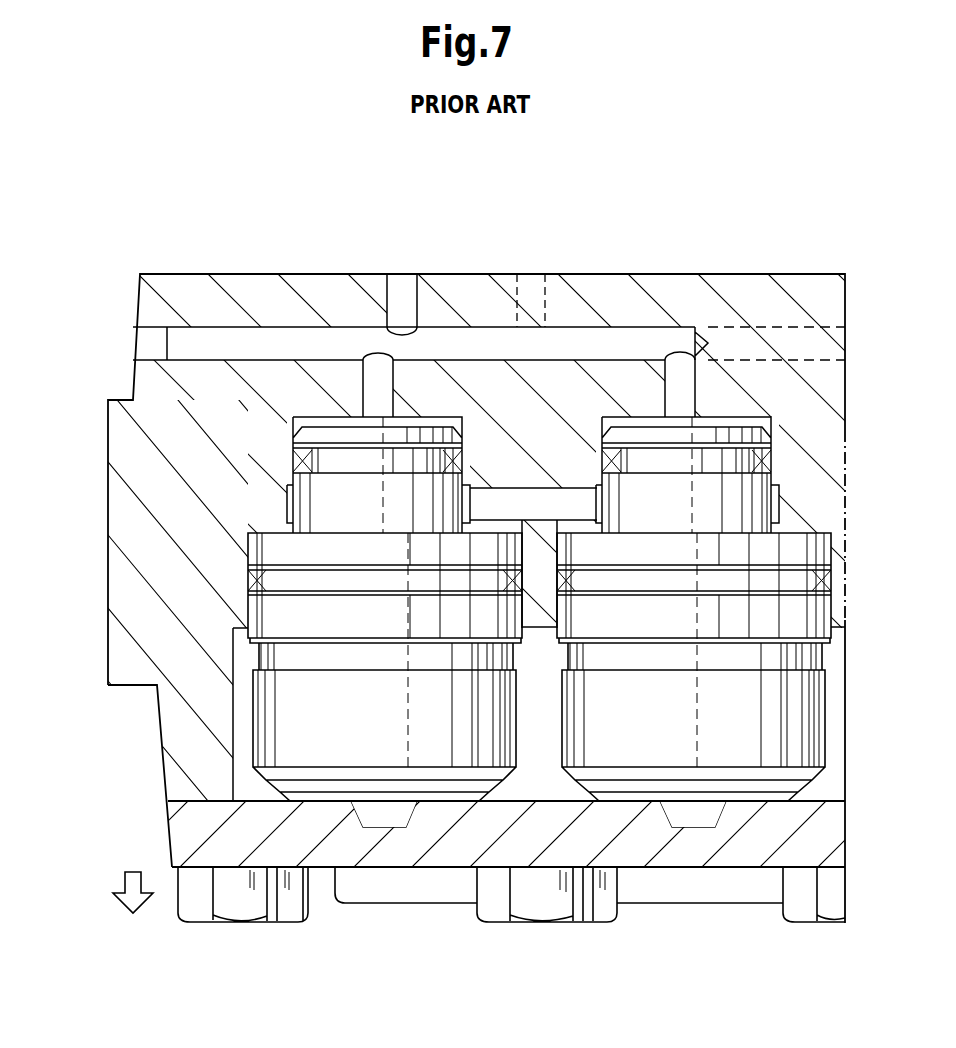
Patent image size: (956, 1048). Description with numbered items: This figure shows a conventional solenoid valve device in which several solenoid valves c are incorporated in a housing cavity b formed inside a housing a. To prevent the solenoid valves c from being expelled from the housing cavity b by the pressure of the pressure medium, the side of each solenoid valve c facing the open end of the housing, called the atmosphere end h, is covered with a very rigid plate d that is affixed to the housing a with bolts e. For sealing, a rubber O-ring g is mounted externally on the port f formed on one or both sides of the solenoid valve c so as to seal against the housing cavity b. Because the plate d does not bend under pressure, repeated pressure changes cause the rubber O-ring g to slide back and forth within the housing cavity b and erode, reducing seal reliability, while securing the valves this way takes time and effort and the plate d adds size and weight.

The housing a is at (168, 284).
The housing cavity b is at (248, 607).
The solenoid valve c is at (427, 758).
The plate d is at (168, 820).
The bolt e is at (273, 927).
The port f is at (375, 380).
The rubber O-ring g is at (248, 577).
The atmosphere end h is at (133, 917).